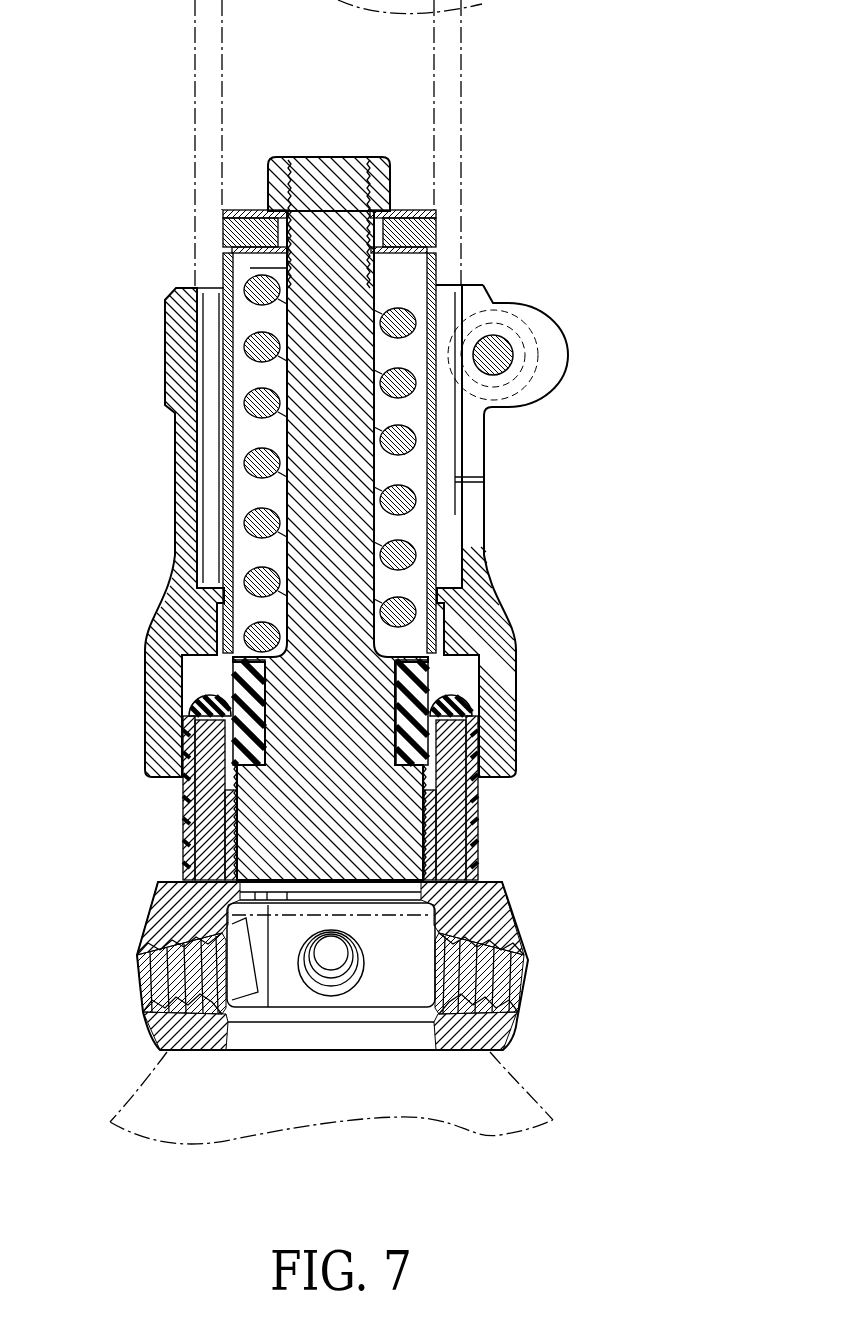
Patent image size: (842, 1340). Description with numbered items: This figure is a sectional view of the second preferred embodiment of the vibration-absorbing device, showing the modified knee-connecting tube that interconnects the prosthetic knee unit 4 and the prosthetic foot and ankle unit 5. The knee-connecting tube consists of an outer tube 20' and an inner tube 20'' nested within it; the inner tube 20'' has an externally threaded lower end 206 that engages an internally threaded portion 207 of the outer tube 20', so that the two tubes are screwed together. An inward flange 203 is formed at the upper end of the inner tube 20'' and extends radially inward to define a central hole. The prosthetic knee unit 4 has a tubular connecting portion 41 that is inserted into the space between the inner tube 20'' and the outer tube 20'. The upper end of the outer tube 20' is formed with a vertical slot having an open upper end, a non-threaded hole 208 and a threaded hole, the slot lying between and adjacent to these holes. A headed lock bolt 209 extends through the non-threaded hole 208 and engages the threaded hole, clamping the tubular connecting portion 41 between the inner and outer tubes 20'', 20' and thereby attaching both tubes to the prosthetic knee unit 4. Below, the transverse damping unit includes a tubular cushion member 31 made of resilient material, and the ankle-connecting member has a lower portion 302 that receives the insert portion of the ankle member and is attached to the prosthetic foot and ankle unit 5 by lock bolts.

The prosthetic knee unit 4 is at (480, 103).
The tubular connecting portion 41 is at (453, 195).
The inward flange 203 is at (437, 226).
The non-threaded hole 208 is at (497, 368).
The headed lock bolt 209 is at (502, 377).
The inner tube 20'' is at (128, 438).
The outer tube 20' is at (277, 531).
The externally threaded lower end 206 is at (480, 453).
The internally threaded portion 207 is at (447, 622).
The tubular cushion member 31 is at (190, 715).
The lower portion 302 is at (497, 920).
The prosthetic foot and ankle unit 5 is at (547, 1067).